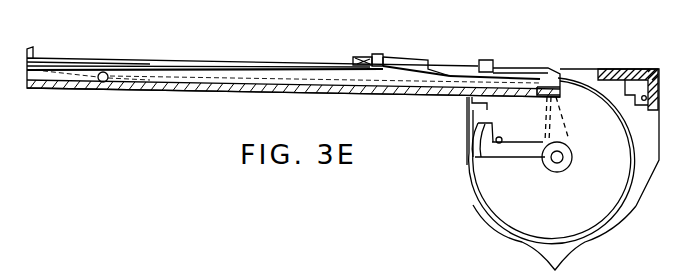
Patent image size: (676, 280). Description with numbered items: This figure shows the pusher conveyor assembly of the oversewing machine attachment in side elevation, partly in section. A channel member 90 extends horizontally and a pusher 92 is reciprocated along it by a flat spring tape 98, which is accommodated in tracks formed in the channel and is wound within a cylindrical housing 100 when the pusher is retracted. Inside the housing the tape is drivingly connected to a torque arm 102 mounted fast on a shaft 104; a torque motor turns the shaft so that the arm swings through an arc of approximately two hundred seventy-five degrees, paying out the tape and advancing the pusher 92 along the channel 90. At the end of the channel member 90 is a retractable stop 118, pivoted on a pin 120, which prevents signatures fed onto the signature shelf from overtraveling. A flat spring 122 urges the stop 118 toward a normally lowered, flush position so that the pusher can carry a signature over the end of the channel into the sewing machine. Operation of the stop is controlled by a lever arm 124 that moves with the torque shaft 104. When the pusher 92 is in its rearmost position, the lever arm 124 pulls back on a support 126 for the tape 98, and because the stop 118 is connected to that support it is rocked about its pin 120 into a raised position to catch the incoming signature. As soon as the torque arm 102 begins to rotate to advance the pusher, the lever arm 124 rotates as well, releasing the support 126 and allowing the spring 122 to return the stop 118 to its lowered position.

The channel member 90 is at (275, 98).
The pusher 92 is at (398, 62).
The tape 98 is at (628, 157).
The cylindrical housing 100 is at (488, 220).
The torque arm 102 is at (521, 158).
The shaft 104 is at (564, 162).
The retractable stop 118 is at (36, 52).
The pin 120 is at (112, 64).
The flat spring 122 is at (147, 93).
The lever arm 124 is at (563, 117).
The support 126 is at (526, 70).